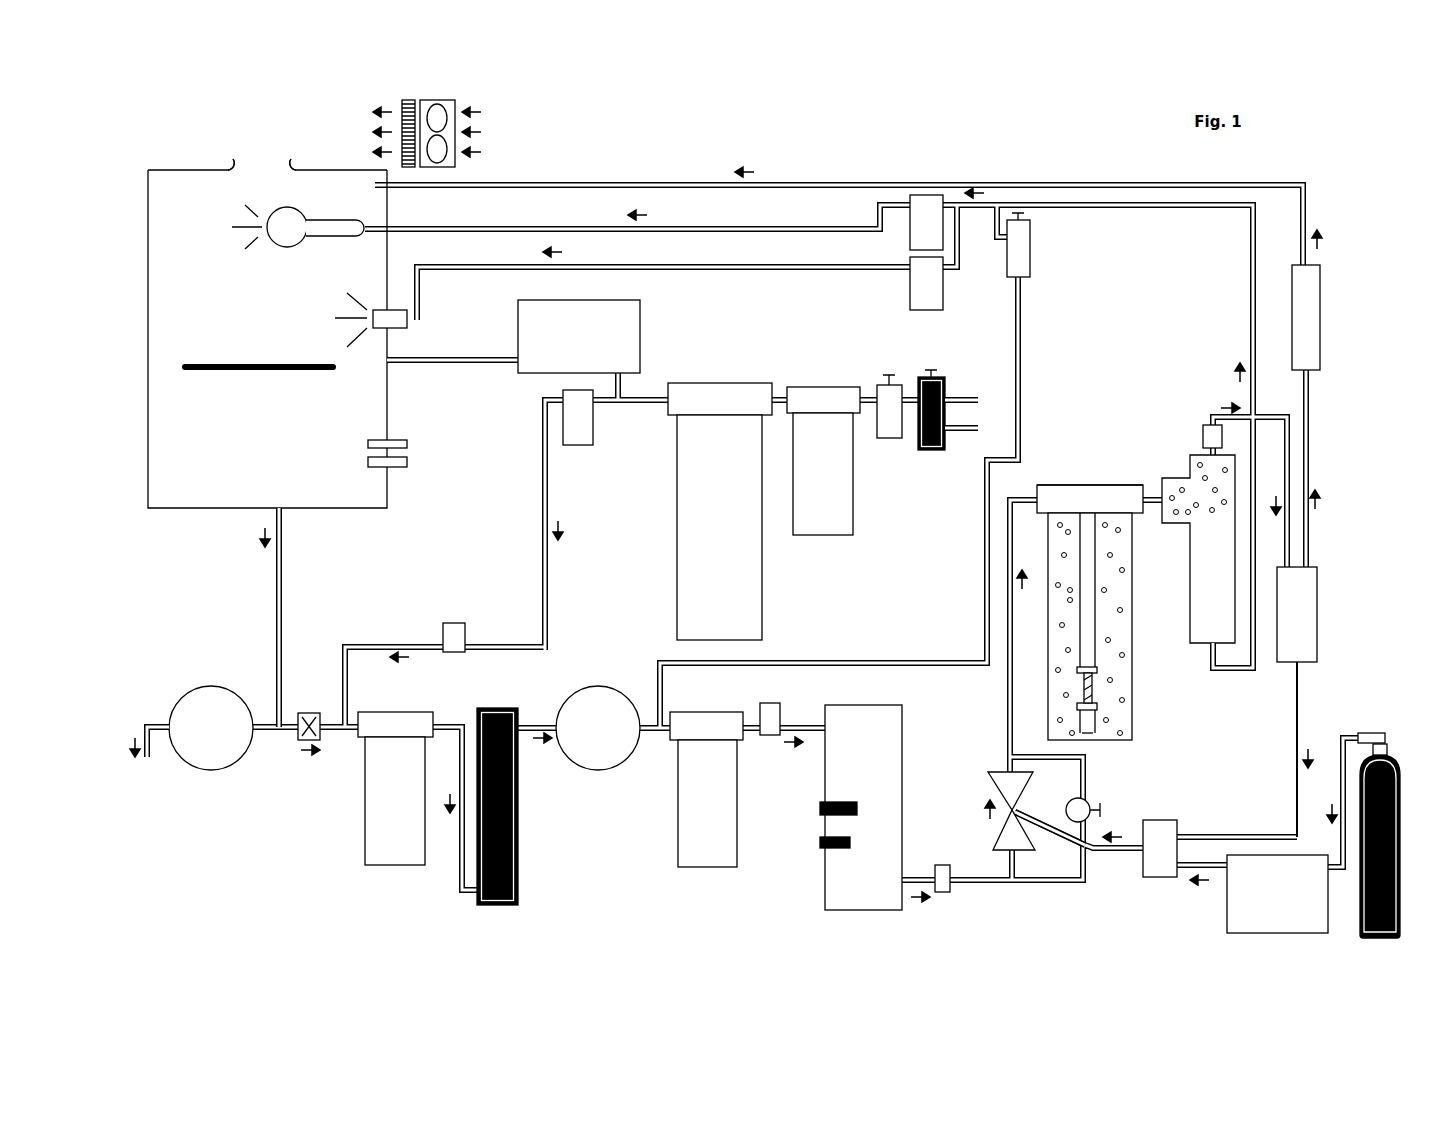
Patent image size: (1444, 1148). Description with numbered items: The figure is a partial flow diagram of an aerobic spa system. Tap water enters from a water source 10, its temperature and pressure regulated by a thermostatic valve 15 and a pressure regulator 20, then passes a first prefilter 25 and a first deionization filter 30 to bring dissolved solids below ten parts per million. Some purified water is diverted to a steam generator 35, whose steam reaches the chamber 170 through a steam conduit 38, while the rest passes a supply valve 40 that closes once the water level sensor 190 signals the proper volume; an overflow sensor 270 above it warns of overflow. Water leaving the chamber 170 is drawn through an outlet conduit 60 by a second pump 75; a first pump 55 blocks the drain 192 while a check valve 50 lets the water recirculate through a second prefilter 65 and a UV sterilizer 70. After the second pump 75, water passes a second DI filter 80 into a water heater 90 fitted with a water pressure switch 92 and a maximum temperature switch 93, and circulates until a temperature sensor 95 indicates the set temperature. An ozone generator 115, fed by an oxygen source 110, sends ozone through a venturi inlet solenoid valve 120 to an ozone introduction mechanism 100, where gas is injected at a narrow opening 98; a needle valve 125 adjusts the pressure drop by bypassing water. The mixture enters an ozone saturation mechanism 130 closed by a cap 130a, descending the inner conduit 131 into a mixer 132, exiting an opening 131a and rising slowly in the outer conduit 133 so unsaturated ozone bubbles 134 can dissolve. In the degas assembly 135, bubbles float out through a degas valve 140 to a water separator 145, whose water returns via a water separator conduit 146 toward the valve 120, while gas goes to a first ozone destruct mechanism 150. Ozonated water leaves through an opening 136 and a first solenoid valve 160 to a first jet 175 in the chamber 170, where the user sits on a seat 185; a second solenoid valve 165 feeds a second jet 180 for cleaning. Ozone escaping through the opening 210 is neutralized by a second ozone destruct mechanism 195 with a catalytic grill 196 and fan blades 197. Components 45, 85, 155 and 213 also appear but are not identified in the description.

The water source 10 is at (978, 401).
The thermostatic valve 15 is at (946, 392).
The pressure regulator 20 is at (889, 373).
The first prefilter 25 is at (823, 387).
The first deionization filter 30 is at (722, 383).
The steam generator 35 is at (640, 338).
The steam conduit 38 is at (453, 364).
The supply valve 40 is at (580, 445).
The valve 45 is at (453, 623).
The check valve 50 is at (310, 713).
The first pump 55 is at (211, 770).
The outlet conduit 60 is at (283, 575).
The second prefilter 65 is at (393, 865).
The UV sterilizer 70 is at (498, 905).
The second pump 75 is at (598, 770).
The second DI filter 80 is at (705, 867).
The valve 85 is at (770, 703).
The water heater 90 is at (835, 824).
The water pressure switch 92 is at (820, 808).
The maximum temperature switch 93 is at (820, 843).
The temperature sensor 95 is at (942, 892).
The narrow opening 98 is at (1017, 809).
The ozone introduction mechanism 100 is at (986, 776).
The oxygen source 110 is at (1402, 853).
The ozone generator 115 is at (1223, 905).
The venturi inlet solenoid valve 120 is at (1158, 877).
The needle valve 125 is at (1088, 799).
The ozone saturation mechanism 130 is at (1103, 578).
The cap 130a is at (1045, 485).
The inner conduit 131 is at (1090, 607).
The opening 131a is at (1095, 722).
The mixer 132 is at (1098, 685).
The outer conduit 133 is at (1058, 605).
The unsaturated ozone bubbles 134 is at (1068, 590).
The degas assembly 135 is at (1190, 477).
The opening 136 is at (1210, 650).
The degas valve 140 is at (1203, 437).
The water separator 145 is at (1317, 613).
The water separator conduit 146 is at (1300, 683).
The first ozone destruct mechanism 150 is at (1320, 315).
The valve 155 is at (1030, 249).
The first solenoid valve 160 is at (923, 195).
The second solenoid valve 165 is at (927, 310).
The chamber 170 is at (148, 293).
The first jet 175 is at (288, 247).
The second jet 180 is at (400, 330).
The seat 185 is at (262, 371).
The water level sensor 190 is at (368, 461).
The drain 192 is at (144, 732).
The second ozone destruct mechanism 195 is at (443, 129).
The grill 196 is at (402, 103).
The fan blades 197 is at (441, 114).
The opening 210 is at (170, 168).
The door hinge 213 is at (254, 166).
The overflow sensor 270 is at (368, 443).